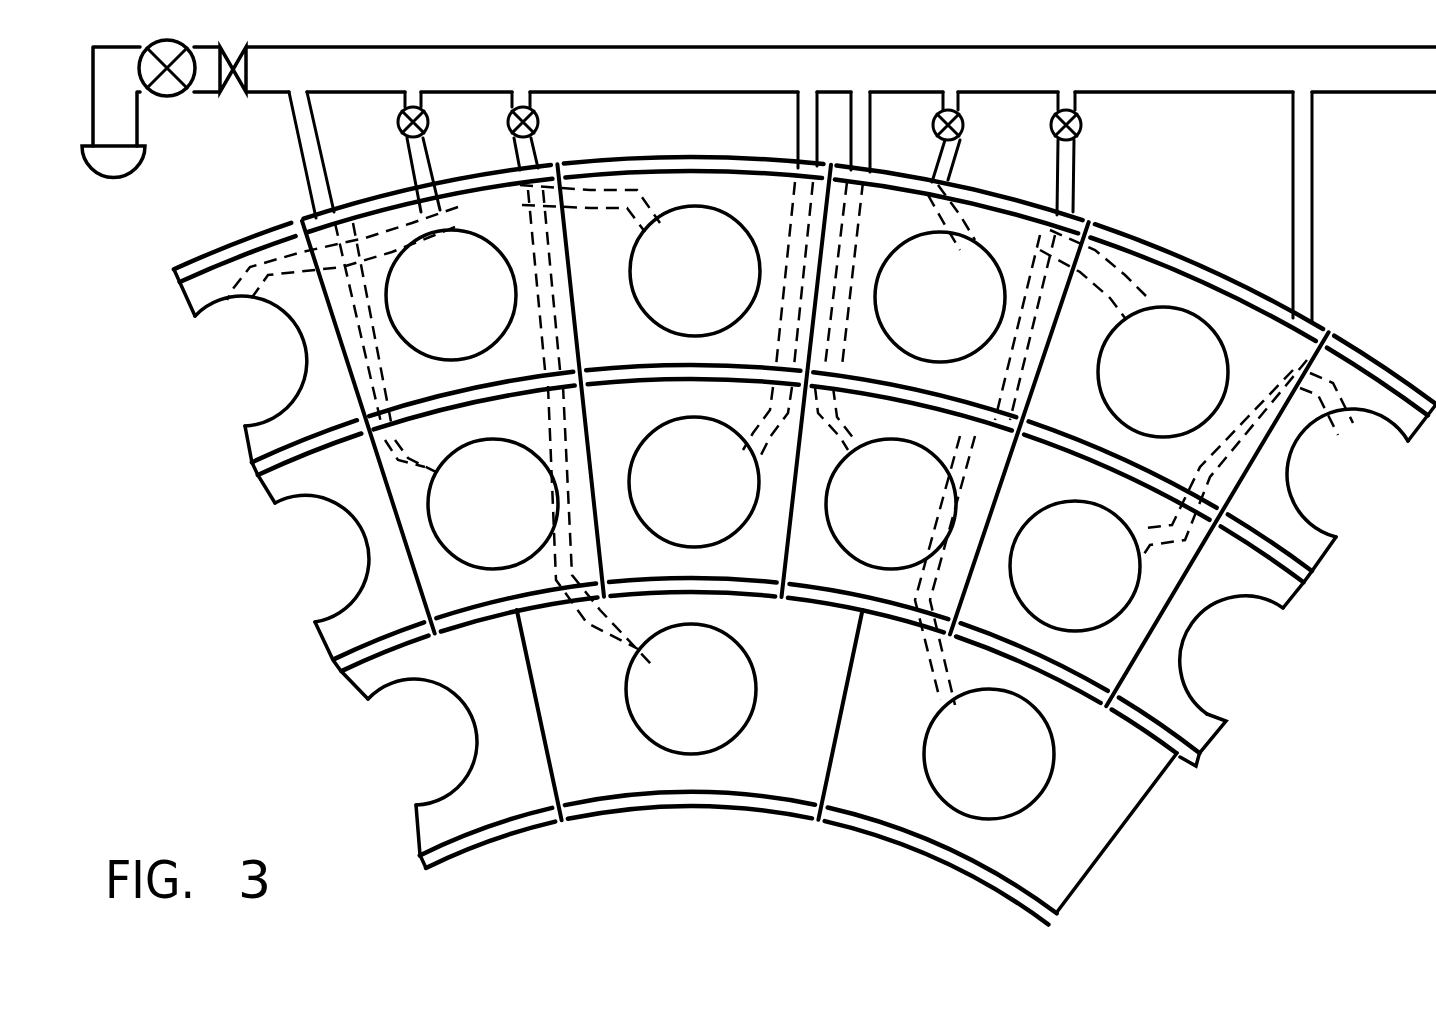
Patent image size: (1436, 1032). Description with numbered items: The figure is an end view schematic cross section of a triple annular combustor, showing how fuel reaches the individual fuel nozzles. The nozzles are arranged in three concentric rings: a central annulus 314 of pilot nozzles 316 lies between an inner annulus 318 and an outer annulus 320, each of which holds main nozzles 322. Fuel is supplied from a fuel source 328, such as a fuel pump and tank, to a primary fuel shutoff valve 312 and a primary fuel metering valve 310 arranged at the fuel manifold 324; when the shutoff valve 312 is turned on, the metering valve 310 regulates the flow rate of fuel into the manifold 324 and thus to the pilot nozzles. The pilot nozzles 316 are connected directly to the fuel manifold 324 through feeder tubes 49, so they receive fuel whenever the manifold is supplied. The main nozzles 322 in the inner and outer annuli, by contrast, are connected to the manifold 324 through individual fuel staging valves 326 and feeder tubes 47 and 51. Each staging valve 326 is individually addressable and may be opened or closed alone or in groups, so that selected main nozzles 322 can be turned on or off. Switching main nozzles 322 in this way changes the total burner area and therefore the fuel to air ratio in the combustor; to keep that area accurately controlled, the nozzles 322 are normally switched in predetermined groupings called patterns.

The fuel manifold 324 is at (706, 83).
The fuel staging valve 326 is at (398, 120).
The primary fuel metering valve 310 is at (153, 97).
The primary fuel shutoff valve 312 is at (234, 97).
The fuel source 328 is at (125, 190).
The feeder tube 49 is at (308, 172).
The feeder tube 47 is at (409, 158).
The feeder tube 51 is at (518, 160).
The outer annulus 320 is at (190, 398).
The central annulus 314 is at (254, 588).
The inner annulus 318 is at (370, 798).
The main nozzle 322 is at (481, 305).
The pilot nozzle 316 is at (519, 518).